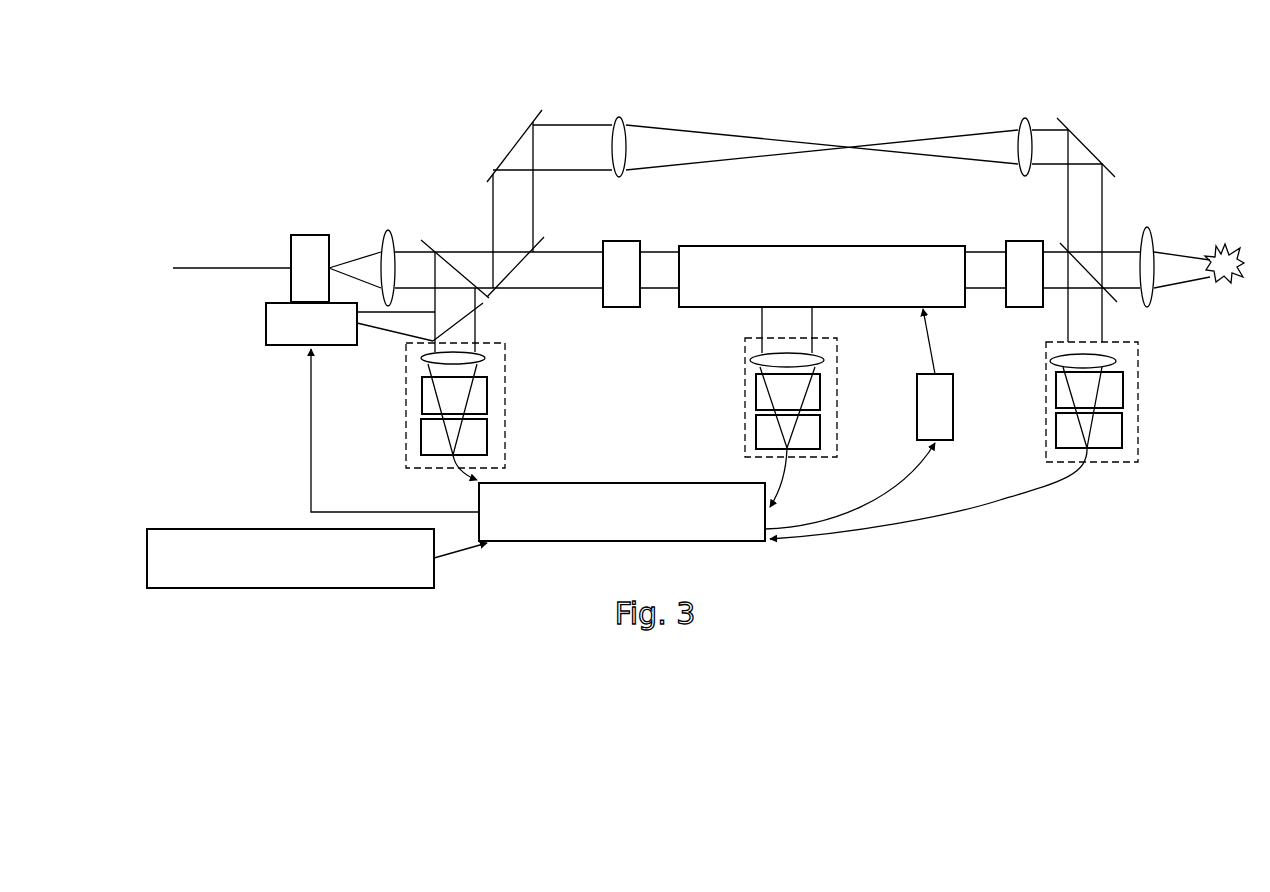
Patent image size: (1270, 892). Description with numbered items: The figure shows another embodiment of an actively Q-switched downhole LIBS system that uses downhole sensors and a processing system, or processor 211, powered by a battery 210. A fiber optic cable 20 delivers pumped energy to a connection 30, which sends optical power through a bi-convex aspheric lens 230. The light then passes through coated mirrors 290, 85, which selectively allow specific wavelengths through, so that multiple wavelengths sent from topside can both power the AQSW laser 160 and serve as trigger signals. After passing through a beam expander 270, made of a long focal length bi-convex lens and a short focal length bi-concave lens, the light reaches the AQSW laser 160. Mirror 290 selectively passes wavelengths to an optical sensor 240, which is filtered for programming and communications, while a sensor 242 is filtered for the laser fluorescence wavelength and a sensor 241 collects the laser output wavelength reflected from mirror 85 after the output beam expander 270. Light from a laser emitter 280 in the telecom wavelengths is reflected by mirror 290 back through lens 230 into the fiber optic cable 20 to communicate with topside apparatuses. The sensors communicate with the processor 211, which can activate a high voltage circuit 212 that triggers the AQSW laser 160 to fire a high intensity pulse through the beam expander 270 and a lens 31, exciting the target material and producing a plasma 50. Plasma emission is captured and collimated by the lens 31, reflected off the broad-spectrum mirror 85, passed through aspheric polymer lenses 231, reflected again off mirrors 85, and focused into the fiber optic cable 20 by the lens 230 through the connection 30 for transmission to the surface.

The fiber optic cable 20 is at (197, 268).
The connection 30 is at (312, 235).
The lens 230 is at (388, 230).
The mirror 290 is at (442, 247).
The mirror 85 is at (503, 153).
The lenses 231 is at (622, 117).
The lens 31 is at (1147, 225).
The plasma 50 is at (1223, 278).
The beam expander 270 is at (622, 307).
The AQSW laser 160 is at (815, 290).
The laser emitter 280 is at (298, 334).
The optical sensor 240 is at (406, 398).
The sensor 242 is at (745, 398).
The sensor 241 is at (1138, 400).
The high voltage circuit 212 is at (955, 417).
The processor 211 is at (608, 524).
The battery 210 is at (265, 572).